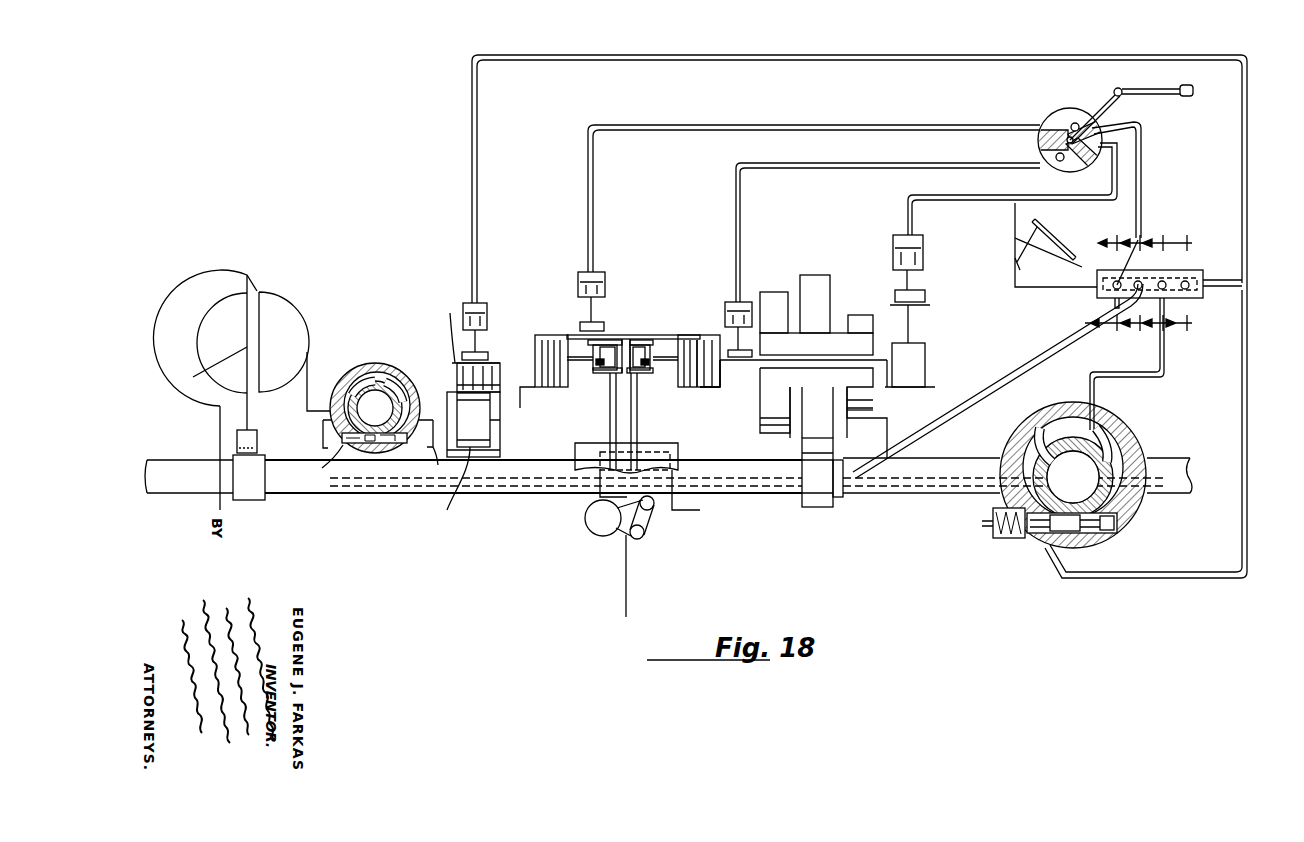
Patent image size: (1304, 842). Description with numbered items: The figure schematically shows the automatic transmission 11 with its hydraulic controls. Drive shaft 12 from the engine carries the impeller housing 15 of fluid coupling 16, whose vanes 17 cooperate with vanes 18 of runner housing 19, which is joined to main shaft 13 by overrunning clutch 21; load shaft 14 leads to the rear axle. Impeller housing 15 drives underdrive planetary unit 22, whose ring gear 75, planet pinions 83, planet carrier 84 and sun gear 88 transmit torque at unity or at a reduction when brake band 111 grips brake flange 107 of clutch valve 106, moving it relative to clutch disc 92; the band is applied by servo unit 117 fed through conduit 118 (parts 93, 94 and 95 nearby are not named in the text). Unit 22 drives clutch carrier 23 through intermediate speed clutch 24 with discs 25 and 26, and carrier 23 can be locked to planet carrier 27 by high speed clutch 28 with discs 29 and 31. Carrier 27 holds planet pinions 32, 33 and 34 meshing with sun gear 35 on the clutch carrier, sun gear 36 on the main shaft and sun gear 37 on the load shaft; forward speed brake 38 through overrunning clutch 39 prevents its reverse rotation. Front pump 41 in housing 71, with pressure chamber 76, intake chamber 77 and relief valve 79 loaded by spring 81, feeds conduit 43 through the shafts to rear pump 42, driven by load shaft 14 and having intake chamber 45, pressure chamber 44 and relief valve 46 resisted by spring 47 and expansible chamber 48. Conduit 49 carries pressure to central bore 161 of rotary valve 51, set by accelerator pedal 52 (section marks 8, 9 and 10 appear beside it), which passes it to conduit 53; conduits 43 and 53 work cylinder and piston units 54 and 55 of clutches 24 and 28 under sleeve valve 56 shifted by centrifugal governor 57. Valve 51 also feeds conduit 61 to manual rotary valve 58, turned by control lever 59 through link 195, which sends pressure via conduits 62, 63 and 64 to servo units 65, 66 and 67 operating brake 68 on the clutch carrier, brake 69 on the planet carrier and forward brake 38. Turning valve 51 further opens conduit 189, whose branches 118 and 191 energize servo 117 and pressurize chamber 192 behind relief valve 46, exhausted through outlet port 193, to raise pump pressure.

The speed position 8 is at (1137, 284).
The speed position 9 is at (1128, 282).
The speed position 10 is at (1152, 282).
The automatic transmission 11 is at (552, 535).
The drive shaft 12 is at (170, 462).
The main shaft 13 is at (385, 494).
The load shaft 14 is at (918, 494).
The impeller housing 15 is at (270, 282).
The fluid coupling 16 is at (244, 368).
The impeller vanes 17 is at (290, 347).
The runner vanes 18 is at (200, 320).
The runner housing 19 is at (193, 372).
The overrunning clutch 21 is at (237, 440).
The underdrive planetary unit 22 is at (447, 365).
The clutch carrier 23 is at (633, 343).
The intermediate speed clutch 24 is at (612, 343).
The clutch discs 25 is at (535, 373).
The clutch discs 26 is at (553, 340).
The planet carrier 27 is at (740, 362).
The high speed clutch 28 is at (702, 330).
The clutch discs 29 is at (683, 388).
The clutch discs 31 is at (686, 335).
The planet pinions 32 is at (778, 292).
The planet pinions 33 is at (815, 276).
The planet pinions 34 is at (862, 316).
The sun gear 35 is at (775, 435).
The sun gear 36 is at (818, 507).
The sun gear 37 is at (858, 411).
The forward speed brake 38 is at (922, 297).
The overrunning clutch 39 is at (925, 360).
The front fluid pump 41 is at (383, 391).
The rear fluid pump 42 is at (1062, 482).
The conduit 43 is at (610, 419).
The pressure chamber 44 is at (1107, 448).
The intake chamber 45 is at (1040, 448).
The pressure relief valve 46 is at (1078, 533).
The spring 47 is at (990, 530).
The expansible chamber 48 is at (1003, 538).
The conduit 49 is at (1165, 328).
The rotary hydraulic valve 51 is at (1160, 270).
The accelerator pedal 52 is at (1052, 222).
The conduit 53 is at (638, 419).
The cylinder and piston unit 54 is at (600, 375).
The cylinder and piston unit 55 is at (642, 375).
The hydraulic sleeve valve 56 is at (613, 490).
The centrifugal governor 57 is at (618, 533).
The rotary hydraulic valve 58 is at (1117, 116).
The control lever 59 is at (1190, 87).
The conduit 61 is at (1142, 182).
The conduit 62 is at (822, 127).
The conduit 63 is at (860, 164).
The conduit 64 is at (972, 197).
The hydraulic servo unit 65 is at (604, 285).
The hydraulic servo unit 66 is at (747, 303).
The hydraulic servo unit 67 is at (924, 266).
The brake 68 is at (602, 326).
The brake 69 is at (733, 304).
The pump housing 71 is at (320, 410).
The ring gear 75 is at (487, 397).
The pressure chamber 76 is at (395, 385).
The intake chamber 77 is at (355, 395).
The pressure relief valve 79 is at (395, 442).
The spring 81 is at (332, 461).
The planet pinions 83 is at (509, 423).
The planet carrier 84 is at (430, 460).
The sun gear 88 is at (457, 484).
The clutch disc 92 is at (500, 450).
The valve cylinder 93 is at (473, 368).
The cylinder head 94 is at (452, 368).
The cylinder piston 95 is at (456, 385).
The clutch valve 106 is at (493, 425).
The brake flange 107 is at (441, 334).
The brake band 111 is at (486, 354).
The hydraulic servo unit 117 is at (491, 307).
The conduit 118 is at (474, 163).
The central bore 161 is at (1162, 282).
The conduit 189 is at (1218, 288).
The branch conduit 191 is at (1248, 402).
The chamber 192 is at (1045, 547).
The outlet port 193 is at (1045, 530).
The selector lever 195 is at (1134, 102).